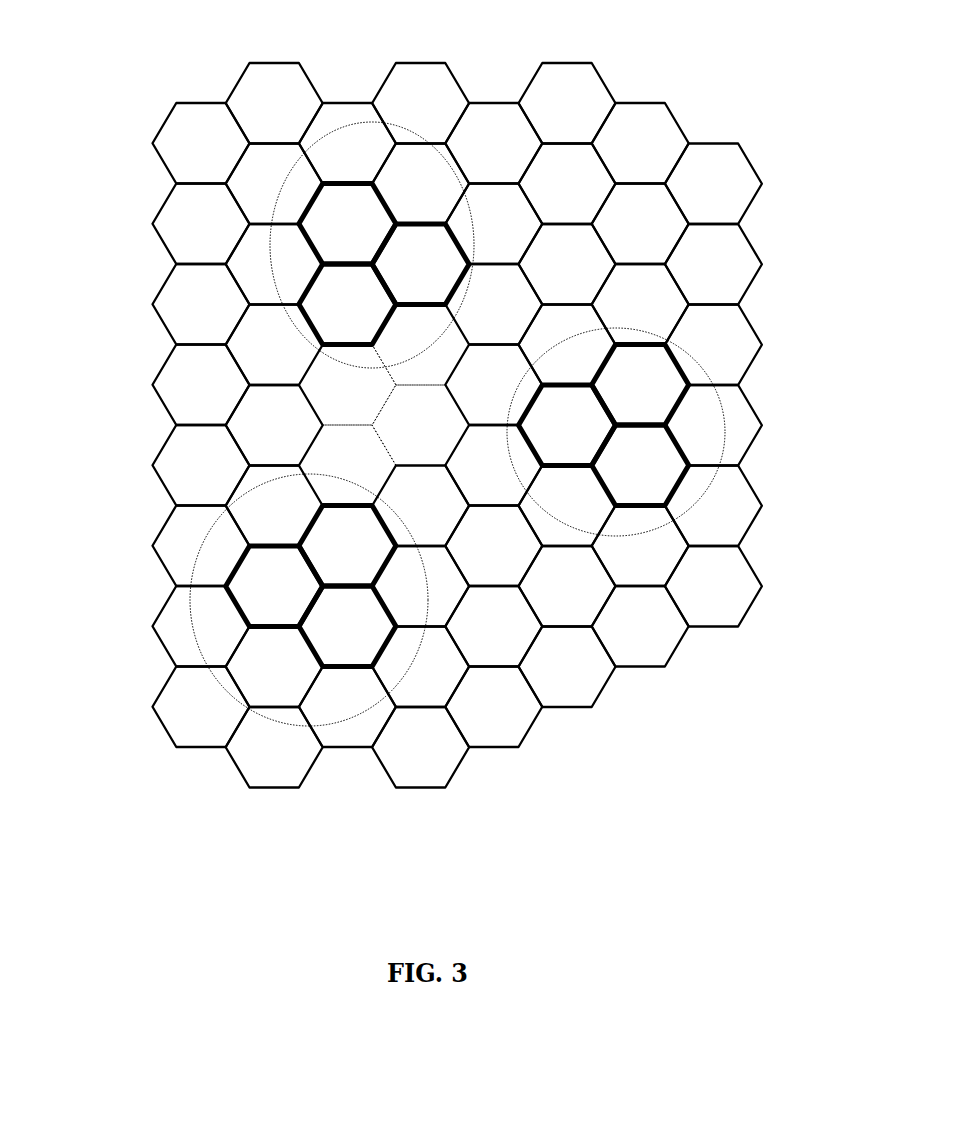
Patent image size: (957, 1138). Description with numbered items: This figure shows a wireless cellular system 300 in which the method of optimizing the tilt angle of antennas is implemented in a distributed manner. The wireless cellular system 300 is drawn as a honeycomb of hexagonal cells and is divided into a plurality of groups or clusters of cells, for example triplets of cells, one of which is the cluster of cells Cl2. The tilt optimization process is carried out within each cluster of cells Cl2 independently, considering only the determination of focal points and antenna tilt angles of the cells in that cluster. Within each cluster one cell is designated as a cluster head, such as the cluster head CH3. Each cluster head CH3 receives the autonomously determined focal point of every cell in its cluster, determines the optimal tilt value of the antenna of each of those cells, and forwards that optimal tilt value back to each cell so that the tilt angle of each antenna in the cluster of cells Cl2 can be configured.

The wireless cellular system 300 is at (645, 102).
The cluster head CH3 is at (457, 424).
The cluster of cells Cl2 is at (337, 36).